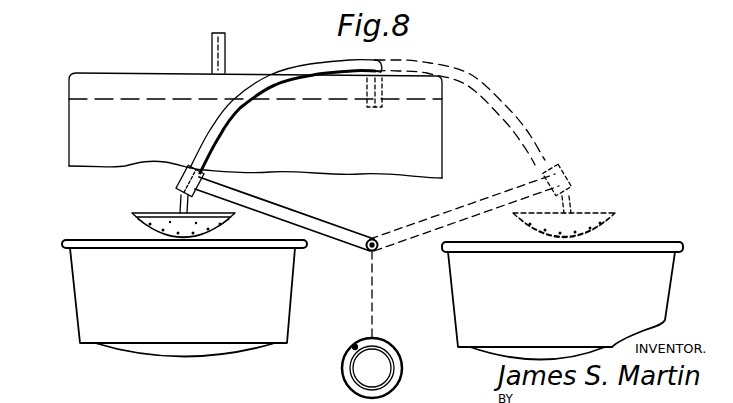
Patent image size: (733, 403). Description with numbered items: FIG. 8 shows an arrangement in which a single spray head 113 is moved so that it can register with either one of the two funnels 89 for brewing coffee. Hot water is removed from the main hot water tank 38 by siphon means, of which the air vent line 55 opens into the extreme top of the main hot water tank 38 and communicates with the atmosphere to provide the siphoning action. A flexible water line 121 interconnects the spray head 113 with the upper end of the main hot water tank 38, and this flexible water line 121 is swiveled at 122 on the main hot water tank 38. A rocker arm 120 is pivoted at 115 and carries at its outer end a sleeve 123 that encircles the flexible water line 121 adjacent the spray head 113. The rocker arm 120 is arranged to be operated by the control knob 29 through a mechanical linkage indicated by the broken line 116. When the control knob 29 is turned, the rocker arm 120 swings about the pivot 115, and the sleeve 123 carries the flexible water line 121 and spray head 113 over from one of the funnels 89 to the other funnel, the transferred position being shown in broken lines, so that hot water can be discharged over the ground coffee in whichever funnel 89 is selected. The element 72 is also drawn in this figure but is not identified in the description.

The main hot water tank 38 is at (77, 144).
The air vent line 55 is at (212, 47).
The flexible water line 121 is at (300, 67).
The swivel 122 is at (378, 107).
The sleeve 123 is at (178, 183).
The spray head 113 is at (150, 213).
The rocker arm 120 is at (316, 220).
The pivot 115 is at (374, 239).
The broken line 116 is at (373, 293).
The control knob 29 is at (375, 367).
The nipple 72 is at (353, 346).
The funnel 89 is at (290, 293).